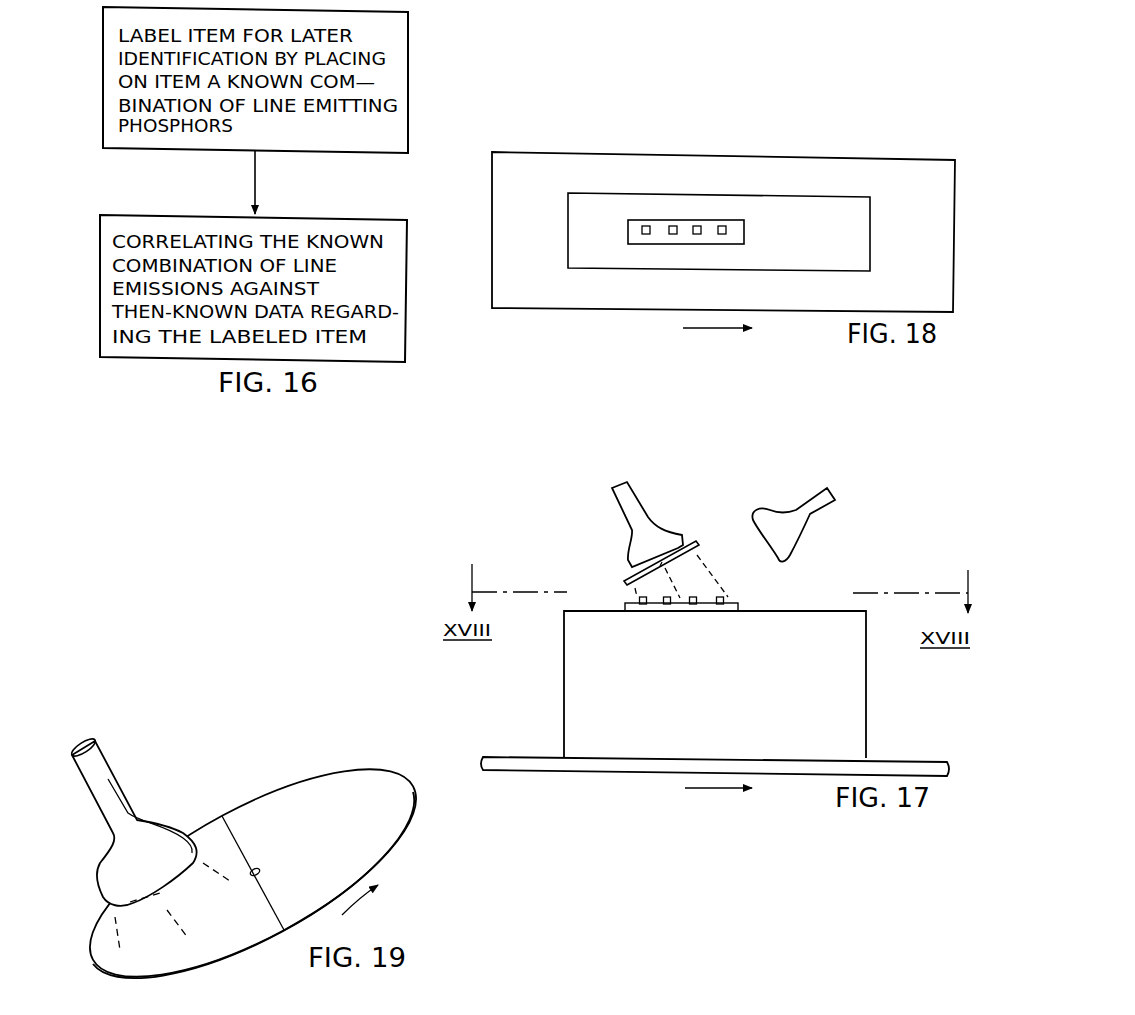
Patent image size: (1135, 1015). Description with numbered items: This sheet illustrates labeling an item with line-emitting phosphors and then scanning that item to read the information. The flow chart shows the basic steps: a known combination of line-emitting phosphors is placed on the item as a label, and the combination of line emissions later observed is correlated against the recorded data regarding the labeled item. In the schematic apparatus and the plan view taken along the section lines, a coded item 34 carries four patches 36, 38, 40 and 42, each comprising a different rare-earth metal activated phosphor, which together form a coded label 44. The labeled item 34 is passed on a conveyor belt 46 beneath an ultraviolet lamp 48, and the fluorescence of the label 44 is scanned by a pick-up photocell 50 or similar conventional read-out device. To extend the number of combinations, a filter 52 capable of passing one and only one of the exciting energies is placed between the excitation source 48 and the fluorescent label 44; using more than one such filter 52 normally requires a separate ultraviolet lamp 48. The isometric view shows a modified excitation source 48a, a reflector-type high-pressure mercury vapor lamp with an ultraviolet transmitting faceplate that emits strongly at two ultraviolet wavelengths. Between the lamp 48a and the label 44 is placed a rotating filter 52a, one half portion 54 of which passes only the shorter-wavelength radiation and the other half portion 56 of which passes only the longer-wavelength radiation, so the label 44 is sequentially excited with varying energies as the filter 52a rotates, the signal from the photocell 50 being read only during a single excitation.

In FIG. 18, the coded item 34 is at (863, 225).
In FIG. 17, the coded item 34 is at (568, 663).
In FIG. 18, the phosphor patch 36 is at (644, 226).
In FIG. 17, the phosphor patch 36 is at (643, 605).
In FIG. 18, the phosphor patch 38 is at (672, 226).
In FIG. 17, the phosphor patch 38 is at (667, 605).
In FIG. 18, the phosphor patch 40 is at (698, 226).
In FIG. 17, the phosphor patch 40 is at (693, 605).
In FIG. 18, the phosphor patch 42 is at (725, 224).
In FIG. 17, the phosphor patch 42 is at (722, 605).
In FIG. 18, the coded label 44 is at (790, 241).
In FIG. 17, the coded label 44 is at (772, 598).
In FIG. 18, the conveyor belt 46 is at (900, 163).
In FIG. 17, the conveyor belt 46 is at (901, 767).
In FIG. 17, the ultraviolet lamp 48 is at (633, 508).
In FIG. 17, the pick-up photocell 50 is at (813, 512).
In FIG. 17, the filter 52 is at (700, 542).
In FIG. 19, the modified excitation source 48a is at (108, 780).
In FIG. 19, the rotating filter 52a is at (327, 836).
In FIG. 19, the filter half portion 54 is at (241, 933).
In FIG. 19, the filter half portion 56 is at (393, 822).